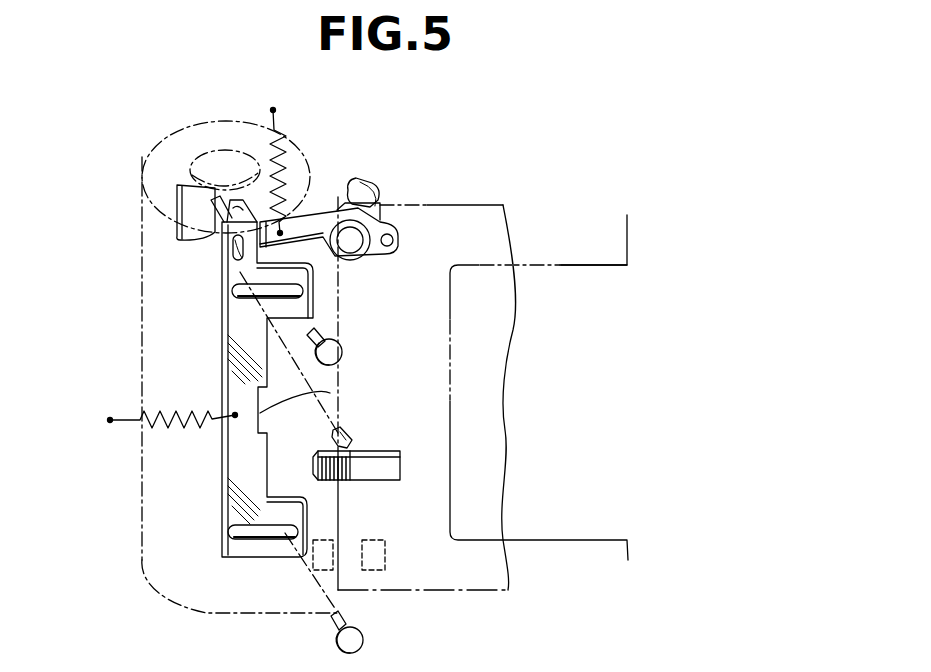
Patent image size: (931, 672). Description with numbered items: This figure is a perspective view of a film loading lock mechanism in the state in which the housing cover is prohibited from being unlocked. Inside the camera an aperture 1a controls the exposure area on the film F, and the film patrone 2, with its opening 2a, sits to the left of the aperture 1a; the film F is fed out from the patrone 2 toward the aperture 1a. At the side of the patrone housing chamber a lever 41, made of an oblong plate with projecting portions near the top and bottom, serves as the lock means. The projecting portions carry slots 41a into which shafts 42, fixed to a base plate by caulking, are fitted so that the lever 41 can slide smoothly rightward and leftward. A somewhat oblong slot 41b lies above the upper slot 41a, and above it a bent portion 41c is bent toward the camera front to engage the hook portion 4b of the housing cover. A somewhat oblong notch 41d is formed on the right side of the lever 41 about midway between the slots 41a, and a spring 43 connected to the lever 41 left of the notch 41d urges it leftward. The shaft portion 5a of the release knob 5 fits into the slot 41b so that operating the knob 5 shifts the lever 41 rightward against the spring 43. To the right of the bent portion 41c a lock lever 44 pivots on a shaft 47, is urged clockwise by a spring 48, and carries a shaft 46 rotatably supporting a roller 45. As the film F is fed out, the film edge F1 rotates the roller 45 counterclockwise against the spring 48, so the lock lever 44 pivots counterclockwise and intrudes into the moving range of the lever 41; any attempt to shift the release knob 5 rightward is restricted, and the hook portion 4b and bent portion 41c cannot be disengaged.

The film patrone 2 is at (143, 172).
The hole in cylinder 2a is at (237, 177).
The hook portion 4b is at (200, 207).
The lever 41 is at (242, 484).
The slots 41a is at (234, 291).
The slot 41b is at (238, 256).
The bent portion 41c is at (214, 215).
The notch 41d is at (330, 393).
The shafts 42 is at (343, 355).
The spring 43 is at (180, 410).
The lock lever 44 is at (302, 233).
The roller 45 is at (363, 193).
The shaft 46 is at (378, 218).
The shaft 47 is at (347, 237).
The spring 48 is at (268, 157).
The release knob 5 is at (378, 470).
The shaft portion 5a is at (355, 437).
The aperture 1a is at (555, 263).
The film F is at (477, 223).
The film edge F1 is at (457, 203).